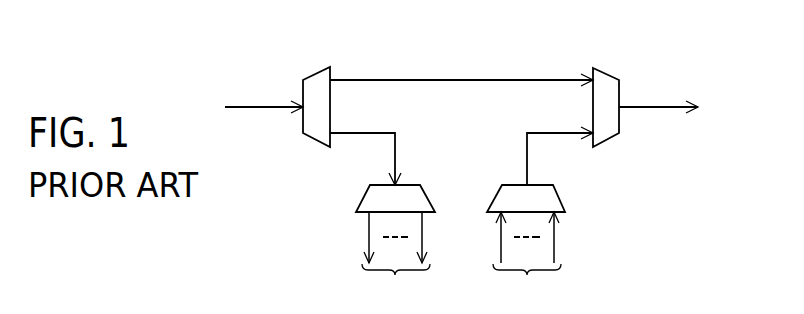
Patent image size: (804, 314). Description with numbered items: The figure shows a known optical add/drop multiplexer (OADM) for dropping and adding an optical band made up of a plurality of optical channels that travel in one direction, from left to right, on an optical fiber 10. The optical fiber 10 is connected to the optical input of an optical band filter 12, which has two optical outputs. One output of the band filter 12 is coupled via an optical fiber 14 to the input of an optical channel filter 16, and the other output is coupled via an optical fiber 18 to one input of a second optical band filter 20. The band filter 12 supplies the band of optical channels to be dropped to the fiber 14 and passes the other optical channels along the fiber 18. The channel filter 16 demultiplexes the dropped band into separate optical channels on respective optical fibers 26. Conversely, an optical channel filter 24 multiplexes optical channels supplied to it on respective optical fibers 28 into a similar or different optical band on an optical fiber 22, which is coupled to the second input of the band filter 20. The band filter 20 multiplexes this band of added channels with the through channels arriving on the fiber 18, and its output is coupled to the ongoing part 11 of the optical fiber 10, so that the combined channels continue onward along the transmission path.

The optical fiber 10 is at (247, 105).
The ongoing part of the optical fiber 11 is at (668, 105).
The optical band filter 12 is at (315, 80).
The optical fiber 14 is at (400, 141).
The optical channel filter 16 is at (364, 207).
The optical fiber 18 is at (448, 80).
The optical band filter 20 is at (605, 80).
The optical fiber 22 is at (524, 137).
The optical channel filter 24 is at (559, 207).
The optical fibers 26 is at (396, 258).
The optical fibers 28 is at (527, 258).